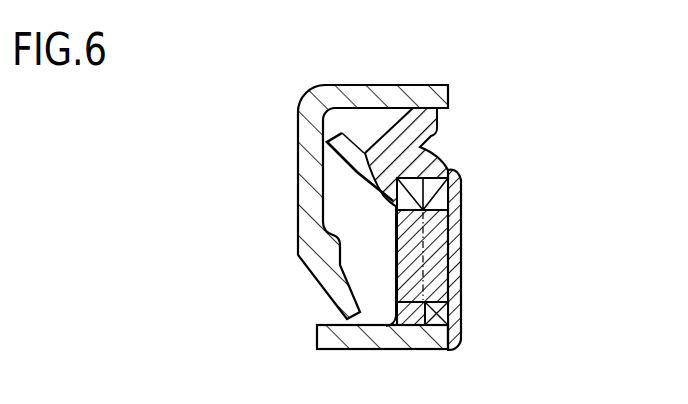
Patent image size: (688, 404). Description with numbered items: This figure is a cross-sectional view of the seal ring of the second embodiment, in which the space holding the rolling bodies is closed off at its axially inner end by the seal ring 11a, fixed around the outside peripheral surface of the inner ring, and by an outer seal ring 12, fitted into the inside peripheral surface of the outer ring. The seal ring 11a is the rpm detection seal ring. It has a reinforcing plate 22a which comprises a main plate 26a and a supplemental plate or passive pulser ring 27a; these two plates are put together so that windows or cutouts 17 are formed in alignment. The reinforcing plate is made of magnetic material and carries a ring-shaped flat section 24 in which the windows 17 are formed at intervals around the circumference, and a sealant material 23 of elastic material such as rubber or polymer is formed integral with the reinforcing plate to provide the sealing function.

The outer seal ring 12 is at (292, 198).
The sealant material 23 is at (433, 140).
The seal ring 11a is at (478, 211).
The windows 17 is at (444, 291).
The flat section 24 is at (397, 264).
The passive pulser ring 27a is at (450, 353).
The main plate 26a is at (330, 337).
The reinforcing plate 22a is at (362, 362).